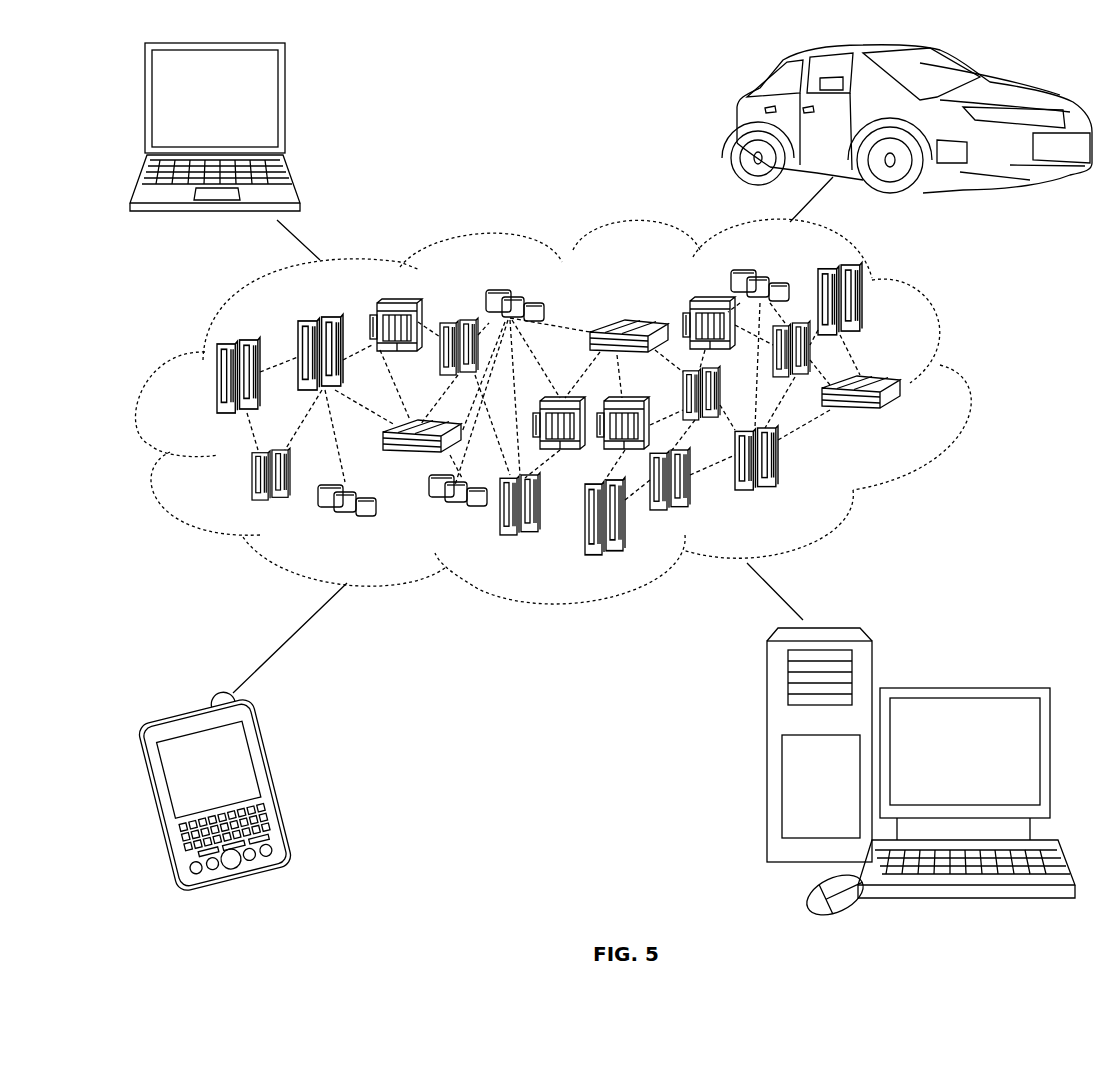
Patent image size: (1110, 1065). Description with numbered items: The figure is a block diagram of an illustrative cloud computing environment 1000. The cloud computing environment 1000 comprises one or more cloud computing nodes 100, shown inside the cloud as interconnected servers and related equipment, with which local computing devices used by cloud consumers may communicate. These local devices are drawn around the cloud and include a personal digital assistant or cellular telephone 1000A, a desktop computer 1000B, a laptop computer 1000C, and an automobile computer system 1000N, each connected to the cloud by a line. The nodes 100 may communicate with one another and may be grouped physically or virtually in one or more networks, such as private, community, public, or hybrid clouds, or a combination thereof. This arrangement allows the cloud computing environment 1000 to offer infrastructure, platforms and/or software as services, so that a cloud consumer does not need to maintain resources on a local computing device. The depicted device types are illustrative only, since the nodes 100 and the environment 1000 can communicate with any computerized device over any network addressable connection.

The cloud computing environment 1000 is at (965, 388).
The cloud computing node 100 is at (907, 421).
The personal digital assistant or cellular telephone 1000A is at (278, 783).
The desktop computer 1000B is at (962, 686).
The laptop computer 1000C is at (290, 107).
The automobile computer system 1000N is at (736, 127).